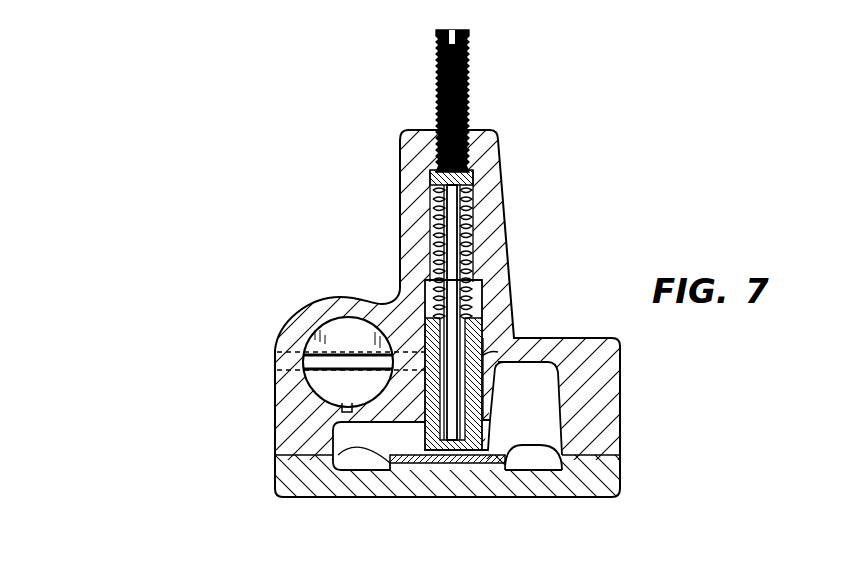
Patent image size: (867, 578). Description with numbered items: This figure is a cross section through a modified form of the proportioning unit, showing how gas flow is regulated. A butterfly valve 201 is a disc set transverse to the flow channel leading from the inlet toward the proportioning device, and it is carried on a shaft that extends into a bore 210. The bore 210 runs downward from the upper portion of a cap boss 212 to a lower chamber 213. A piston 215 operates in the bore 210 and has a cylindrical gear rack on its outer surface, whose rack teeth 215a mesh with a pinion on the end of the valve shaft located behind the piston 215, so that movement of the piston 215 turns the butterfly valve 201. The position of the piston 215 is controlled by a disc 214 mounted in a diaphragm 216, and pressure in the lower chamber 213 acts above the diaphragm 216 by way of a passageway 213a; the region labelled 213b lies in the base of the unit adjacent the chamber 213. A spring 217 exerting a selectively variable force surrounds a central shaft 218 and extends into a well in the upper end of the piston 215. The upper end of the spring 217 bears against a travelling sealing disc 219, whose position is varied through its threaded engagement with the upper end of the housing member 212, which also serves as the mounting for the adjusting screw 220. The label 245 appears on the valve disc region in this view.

The butterfly valve 201 is at (348, 332).
The bore 210 is at (482, 297).
The cap boss 212 is at (493, 215).
The lower chamber 213 is at (545, 405).
The passageway 213a is at (347, 408).
The lower chamber 213b is at (362, 470).
The disc 214 is at (484, 464).
The piston 215 is at (419, 470).
The rack teeth 215a is at (484, 356).
The diaphragm 216 is at (550, 476).
The spring 217 is at (460, 252).
The central shaft 218 is at (440, 206).
The travelling sealing disc 219 is at (478, 172).
The adjusting screw 220 is at (478, 88).
The valve seat 245 is at (353, 373).